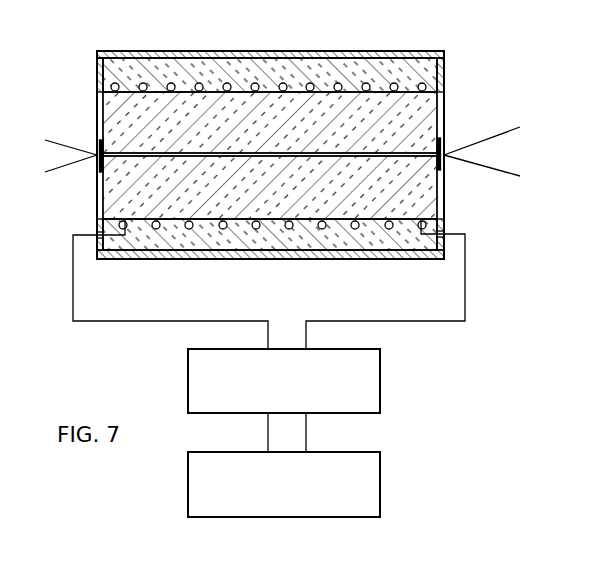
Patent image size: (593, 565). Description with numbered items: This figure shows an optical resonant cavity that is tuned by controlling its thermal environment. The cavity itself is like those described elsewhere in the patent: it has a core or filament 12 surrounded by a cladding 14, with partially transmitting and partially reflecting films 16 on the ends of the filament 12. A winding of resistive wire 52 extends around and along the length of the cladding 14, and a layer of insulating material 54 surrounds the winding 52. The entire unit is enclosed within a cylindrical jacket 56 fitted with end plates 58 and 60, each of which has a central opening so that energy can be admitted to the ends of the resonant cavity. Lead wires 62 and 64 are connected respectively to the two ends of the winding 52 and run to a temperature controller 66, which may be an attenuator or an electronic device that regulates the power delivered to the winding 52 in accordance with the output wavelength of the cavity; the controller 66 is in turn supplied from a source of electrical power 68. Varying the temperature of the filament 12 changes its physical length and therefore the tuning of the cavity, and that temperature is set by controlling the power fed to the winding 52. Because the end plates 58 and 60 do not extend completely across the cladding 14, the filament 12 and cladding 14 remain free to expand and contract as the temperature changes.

The core or filament 12 is at (313, 153).
The cladding 14 is at (273, 191).
The partially transmitting and partially reflecting films 16 is at (97, 170).
The winding of resistive wire 52 is at (334, 83).
The layer of insulating material 54 is at (240, 68).
The cylindrical jacket 56 is at (193, 52).
The end plate 58 is at (97, 72).
The end plate 60 is at (445, 72).
The lead wire 62 is at (72, 291).
The lead wire 64 is at (466, 293).
The temperature controller 66 is at (382, 386).
The source of electrical power 68 is at (382, 484).